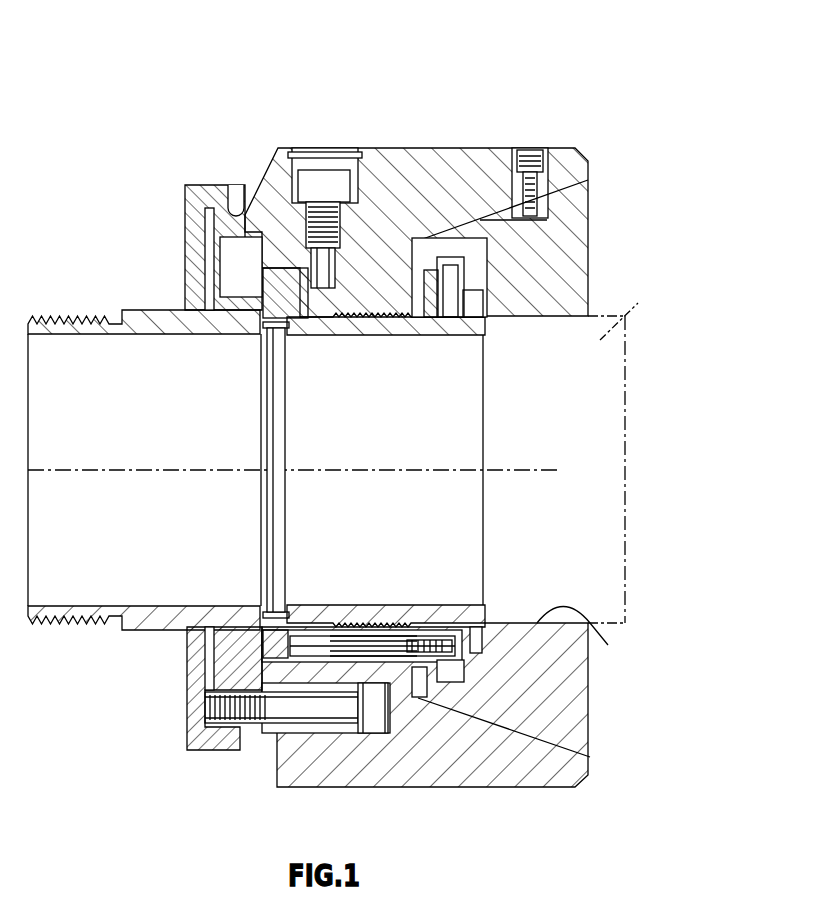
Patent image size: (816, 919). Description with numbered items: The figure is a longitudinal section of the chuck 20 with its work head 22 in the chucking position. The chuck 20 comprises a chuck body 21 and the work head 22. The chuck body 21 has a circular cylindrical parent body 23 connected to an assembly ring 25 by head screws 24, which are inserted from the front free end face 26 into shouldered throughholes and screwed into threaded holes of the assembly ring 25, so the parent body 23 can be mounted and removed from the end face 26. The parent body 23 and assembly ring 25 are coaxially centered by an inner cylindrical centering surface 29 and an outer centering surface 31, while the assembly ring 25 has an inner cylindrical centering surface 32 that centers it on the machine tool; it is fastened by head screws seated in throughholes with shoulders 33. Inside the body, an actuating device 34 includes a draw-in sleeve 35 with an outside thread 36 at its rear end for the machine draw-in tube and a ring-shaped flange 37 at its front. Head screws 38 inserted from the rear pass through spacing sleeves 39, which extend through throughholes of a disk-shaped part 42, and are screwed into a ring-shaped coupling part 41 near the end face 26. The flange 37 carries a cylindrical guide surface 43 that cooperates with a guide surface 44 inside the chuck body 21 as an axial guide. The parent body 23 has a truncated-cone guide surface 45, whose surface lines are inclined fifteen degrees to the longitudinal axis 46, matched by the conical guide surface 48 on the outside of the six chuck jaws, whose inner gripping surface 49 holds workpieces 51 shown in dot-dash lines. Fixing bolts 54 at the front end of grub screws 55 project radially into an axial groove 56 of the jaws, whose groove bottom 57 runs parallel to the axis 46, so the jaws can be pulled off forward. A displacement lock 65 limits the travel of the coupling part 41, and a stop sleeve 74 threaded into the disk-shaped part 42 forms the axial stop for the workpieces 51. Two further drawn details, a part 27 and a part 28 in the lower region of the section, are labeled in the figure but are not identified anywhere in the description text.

The chuck 20 is at (535, 77).
The chuck body 21 is at (384, 106).
The work head 22 is at (618, 222).
The parent body 23 is at (440, 146).
The head screws 24 is at (348, 712).
The assembly ring 25 is at (202, 202).
The front free end face 26 is at (630, 451).
The bore 27 is at (410, 718).
The lower clamping ring 28 is at (237, 718).
The cylindrical centering surface 29 is at (236, 212).
The centering surface 31 is at (243, 738).
The cylindrical centering surface 32 is at (187, 218).
The throughholes with shoulders 33 is at (205, 259).
The actuating device 34 is at (187, 718).
The draw-in sleeve 35 is at (144, 444).
The outside thread 36 is at (57, 316).
The flange 37 is at (280, 293).
The head screws 38 is at (303, 662).
The spacing sleeves 39 is at (318, 645).
The coupling part 41 is at (449, 686).
The disk-shaped part 42 is at (373, 237).
The guide surface 43 is at (264, 162).
The guide surface 44 is at (272, 158).
The guide surface 45 is at (429, 714).
The longitudinal axis 46 is at (162, 473).
The guide surface 48 is at (488, 722).
The gripping surface 49 is at (592, 625).
The workpieces 51 is at (590, 405).
The fixing bolts 54 is at (550, 175).
The grub screw 55 is at (545, 159).
The axial groove 56 is at (547, 213).
The groove bottom 57 is at (497, 210).
The displacement lock 65 is at (335, 128).
The stop sleeve 74 is at (432, 603).